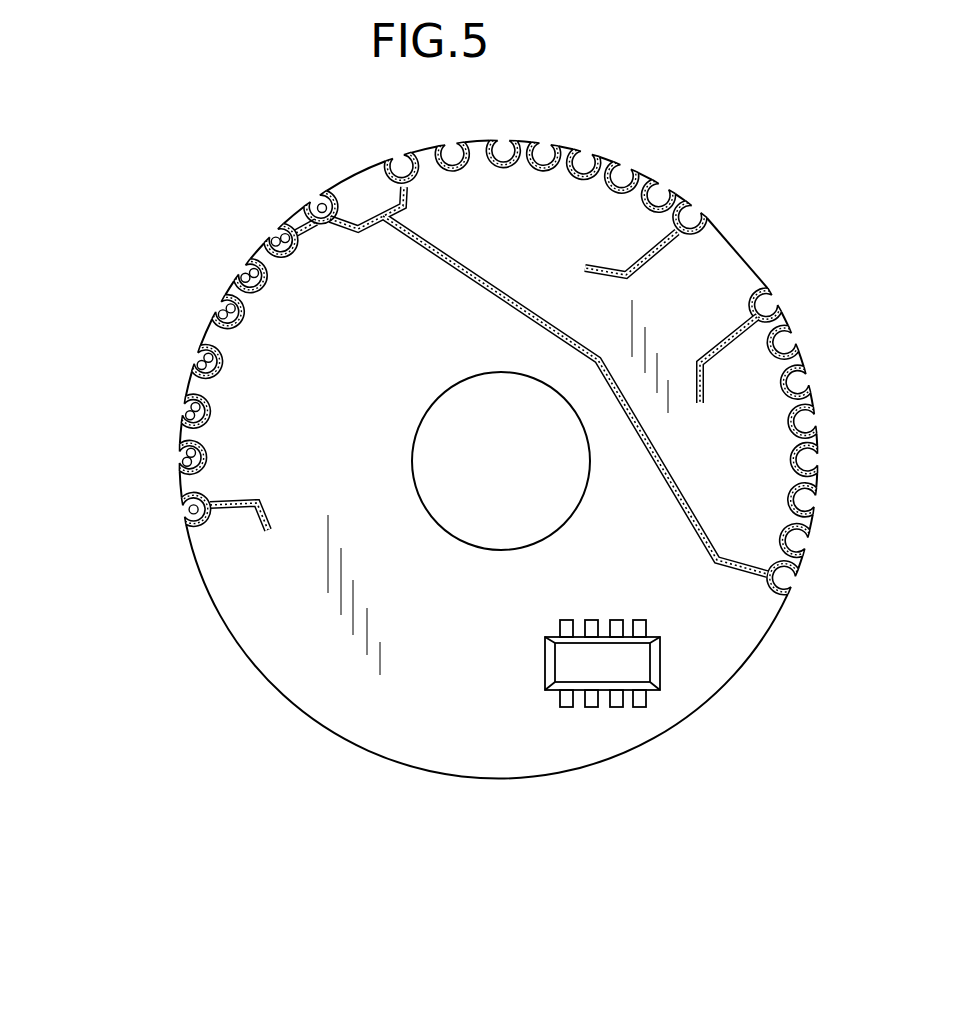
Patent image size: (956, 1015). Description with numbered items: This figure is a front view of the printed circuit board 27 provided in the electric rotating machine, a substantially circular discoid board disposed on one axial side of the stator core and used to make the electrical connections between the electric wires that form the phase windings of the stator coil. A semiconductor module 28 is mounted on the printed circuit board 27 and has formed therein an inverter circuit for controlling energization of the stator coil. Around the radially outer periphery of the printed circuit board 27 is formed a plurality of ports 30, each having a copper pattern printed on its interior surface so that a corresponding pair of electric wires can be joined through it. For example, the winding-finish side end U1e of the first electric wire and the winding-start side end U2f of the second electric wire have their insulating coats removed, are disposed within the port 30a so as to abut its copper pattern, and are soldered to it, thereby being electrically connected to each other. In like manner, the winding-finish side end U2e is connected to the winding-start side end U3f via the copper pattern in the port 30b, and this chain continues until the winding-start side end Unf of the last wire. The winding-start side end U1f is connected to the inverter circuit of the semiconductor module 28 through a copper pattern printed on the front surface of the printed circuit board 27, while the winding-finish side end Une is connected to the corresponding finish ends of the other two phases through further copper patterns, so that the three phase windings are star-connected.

The printed circuit board 27 is at (726, 244).
The semiconductor module 28 is at (609, 672).
The port 30 is at (210, 312).
The port 30a is at (176, 467).
The port 30b is at (182, 412).
The winding-start side end U1f is at (189, 510).
The winding-finish side end U1e is at (183, 462).
The winding-start side end U2f is at (187, 453).
The winding-finish side end U2e is at (186, 414).
The winding-start side end U3f is at (192, 405).
The winding-start side end Unf is at (281, 237).
The winding-finish side end Une is at (318, 206).